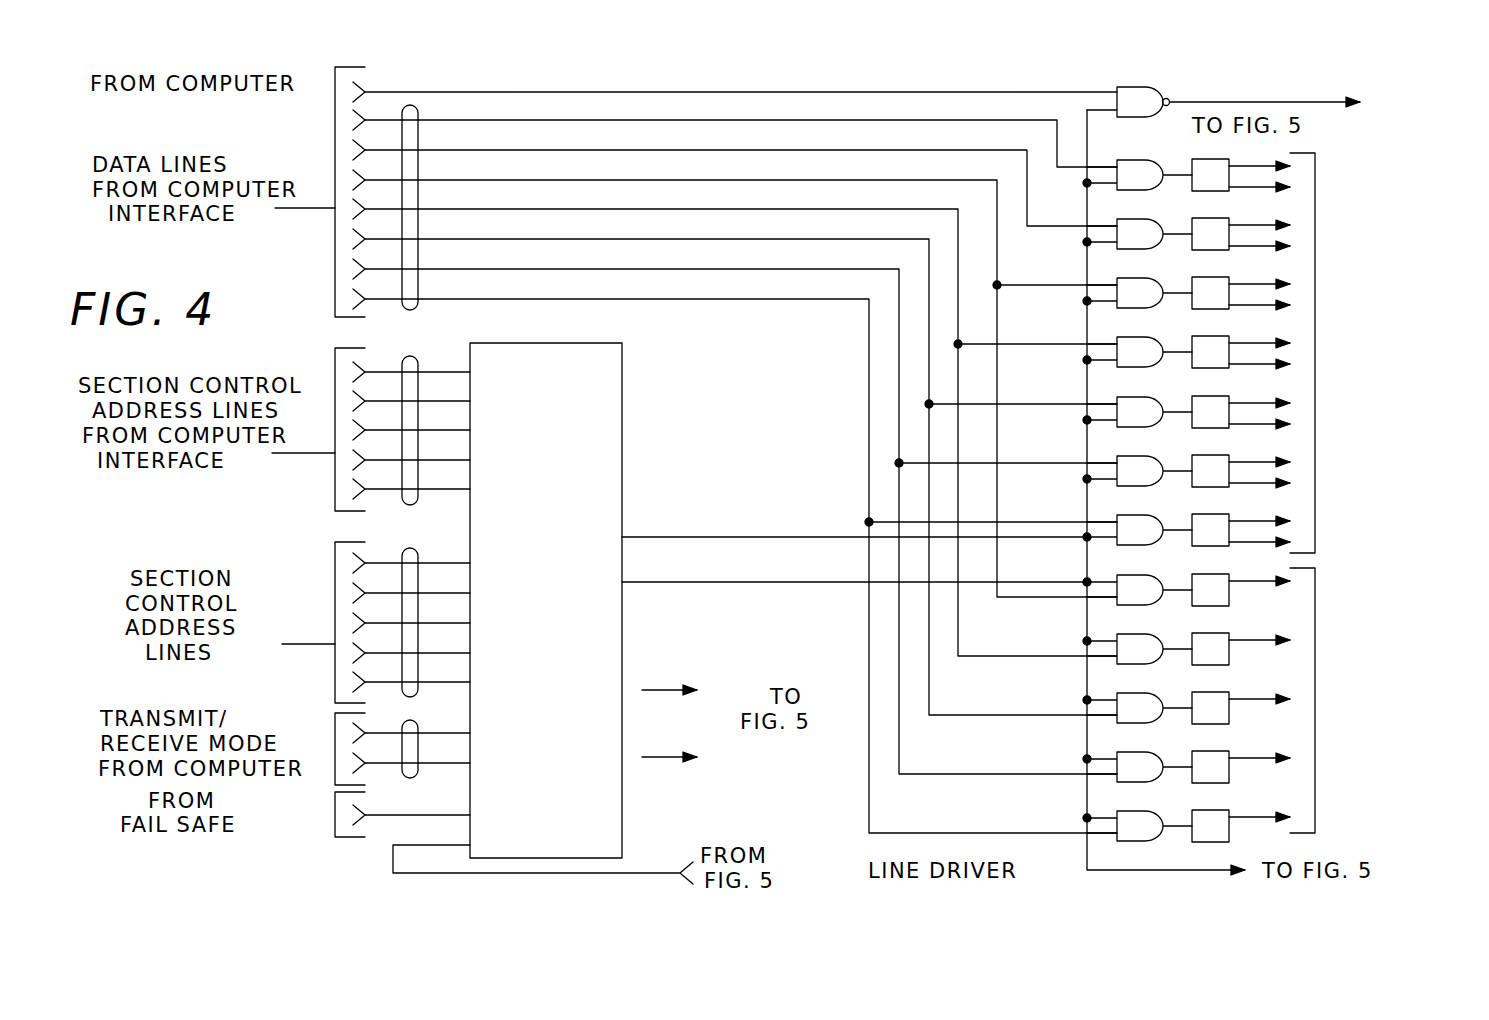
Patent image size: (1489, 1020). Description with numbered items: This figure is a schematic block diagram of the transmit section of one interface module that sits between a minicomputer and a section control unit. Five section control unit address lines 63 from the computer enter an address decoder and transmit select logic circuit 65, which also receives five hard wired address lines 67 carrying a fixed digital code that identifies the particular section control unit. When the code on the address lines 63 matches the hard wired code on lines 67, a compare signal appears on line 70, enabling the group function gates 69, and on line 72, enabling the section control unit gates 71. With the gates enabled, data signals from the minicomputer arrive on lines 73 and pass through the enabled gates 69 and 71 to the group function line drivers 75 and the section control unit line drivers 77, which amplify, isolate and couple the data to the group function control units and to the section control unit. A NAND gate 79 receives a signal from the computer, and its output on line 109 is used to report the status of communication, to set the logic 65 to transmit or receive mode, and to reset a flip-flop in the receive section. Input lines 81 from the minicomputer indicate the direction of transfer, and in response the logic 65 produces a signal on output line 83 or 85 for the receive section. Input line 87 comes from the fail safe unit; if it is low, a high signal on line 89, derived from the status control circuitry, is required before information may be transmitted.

The section control unit address lines 63 is at (418, 390).
The address decoder and transmit select logic circuit 65 is at (546, 600).
The hard wired address lines 67 is at (418, 638).
The group function gates 69 is at (1158, 186).
The line 70 is at (722, 537).
The section control unit gates 71 is at (1158, 601).
The line 72 is at (738, 582).
The lines 73 is at (418, 166).
The group function line drivers 75 is at (1328, 354).
The section control unit line drivers 77 is at (1350, 752).
The NAND gate 79 is at (1150, 87).
The input lines 81 is at (418, 748).
The output line 83 is at (660, 692).
The output line 85 is at (660, 759).
The input line 87 is at (393, 815).
The line 89 is at (410, 873).
The line 109 is at (1240, 102).